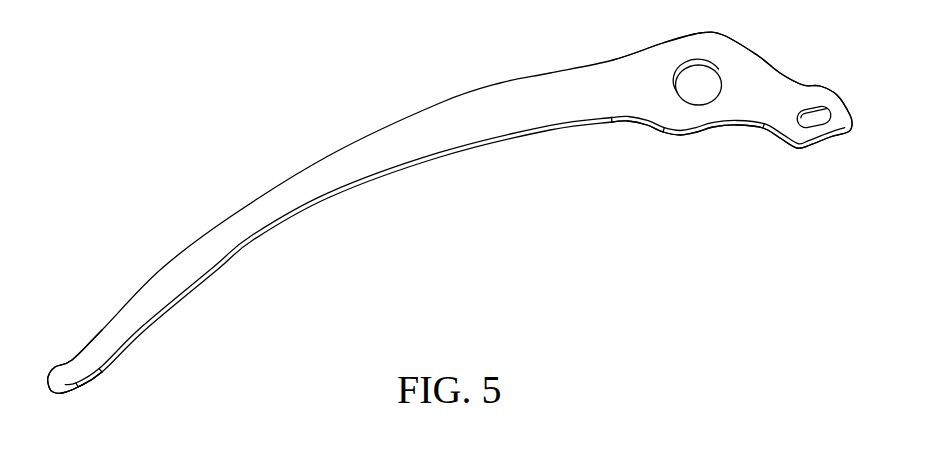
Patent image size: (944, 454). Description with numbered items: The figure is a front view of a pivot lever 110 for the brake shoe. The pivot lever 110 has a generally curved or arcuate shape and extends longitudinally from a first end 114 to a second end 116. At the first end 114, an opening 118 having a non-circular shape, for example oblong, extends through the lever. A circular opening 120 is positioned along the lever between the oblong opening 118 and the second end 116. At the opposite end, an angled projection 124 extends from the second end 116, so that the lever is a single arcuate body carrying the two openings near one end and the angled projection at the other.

The pivot lever 110 is at (335, 119).
The first end 114 is at (790, 75).
The second end 116 is at (84, 393).
The opening 118 is at (813, 142).
The circular opening 120 is at (699, 120).
The angled projection 124 is at (70, 368).